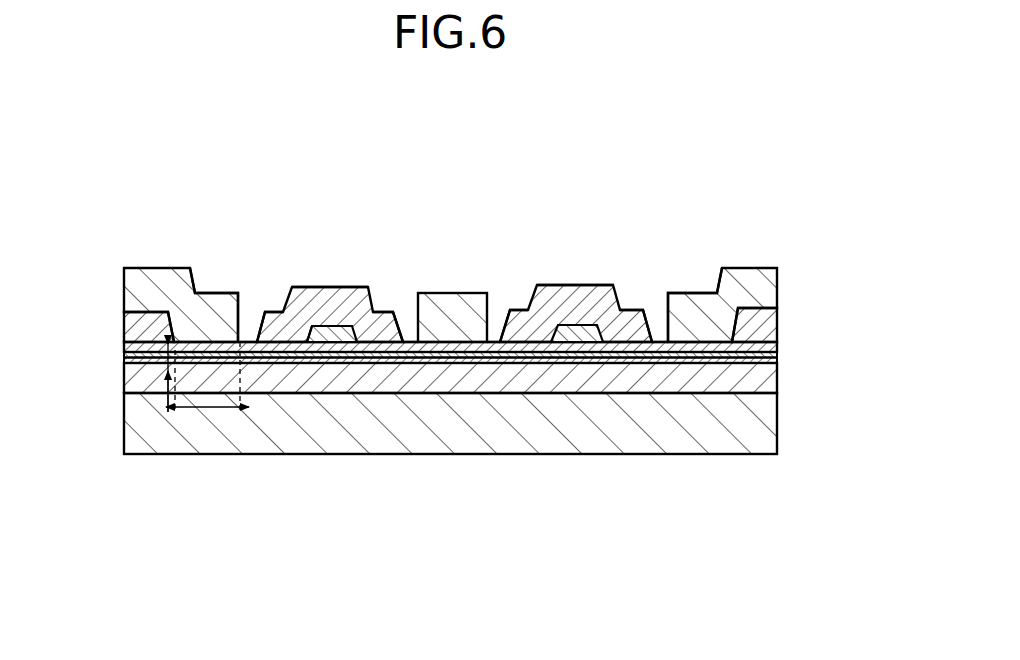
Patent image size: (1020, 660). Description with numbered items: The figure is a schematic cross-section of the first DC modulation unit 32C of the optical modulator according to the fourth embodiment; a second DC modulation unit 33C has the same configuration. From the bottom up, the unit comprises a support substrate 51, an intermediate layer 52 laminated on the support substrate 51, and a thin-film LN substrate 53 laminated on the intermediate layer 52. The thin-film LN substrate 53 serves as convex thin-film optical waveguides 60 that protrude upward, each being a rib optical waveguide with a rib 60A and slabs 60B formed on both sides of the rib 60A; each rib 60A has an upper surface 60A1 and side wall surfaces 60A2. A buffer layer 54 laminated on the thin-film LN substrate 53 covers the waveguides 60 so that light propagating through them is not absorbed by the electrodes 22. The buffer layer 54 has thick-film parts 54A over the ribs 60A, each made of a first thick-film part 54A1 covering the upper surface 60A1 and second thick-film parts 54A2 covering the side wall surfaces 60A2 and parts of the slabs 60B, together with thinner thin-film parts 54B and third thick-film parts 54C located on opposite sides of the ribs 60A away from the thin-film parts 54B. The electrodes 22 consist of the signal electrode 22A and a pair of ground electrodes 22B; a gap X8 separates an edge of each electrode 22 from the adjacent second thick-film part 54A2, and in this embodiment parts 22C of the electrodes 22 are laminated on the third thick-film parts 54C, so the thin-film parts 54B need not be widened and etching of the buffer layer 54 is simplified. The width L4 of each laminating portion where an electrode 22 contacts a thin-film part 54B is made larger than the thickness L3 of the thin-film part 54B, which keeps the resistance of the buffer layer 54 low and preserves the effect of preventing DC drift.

The support substrate 51 is at (752, 437).
The intermediate layer 52 is at (765, 388).
The thin-film LN substrate 53 is at (777, 358).
The buffer layer 54 is at (467, 351).
The thick-film part 54A is at (472, 213).
The first thick-film part 54A1 is at (297, 287).
The second thick-film part 54A2 is at (282, 308).
The thin-film part 54B is at (460, 347).
The third thick-film part 54C is at (123, 312).
The thin-film optical waveguide 60 is at (367, 377).
The rib 60A is at (558, 325).
The upper surface of the rib 60A1 is at (330, 326).
The side wall surface of the rib 60A2 is at (307, 342).
The slab 60B is at (195, 350).
The electrode 22 is at (485, 245).
The signal electrode 22A is at (432, 293).
The ground electrode 22B is at (220, 293).
The part of the electrode 22C is at (147, 277).
The first DC modulation unit 32C is at (746, 183).
The second DC modulation unit 33C is at (464, 351).
The gap X8 is at (256, 340).
The thickness of the thin-film part L3 is at (168, 361).
The width of the laminating portion L4 is at (224, 410).